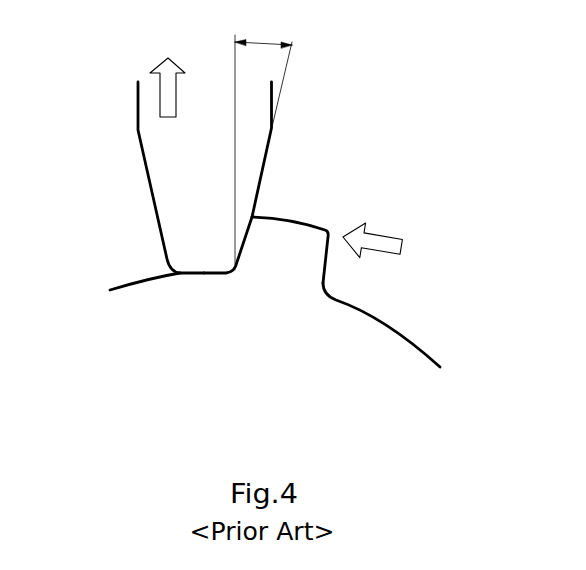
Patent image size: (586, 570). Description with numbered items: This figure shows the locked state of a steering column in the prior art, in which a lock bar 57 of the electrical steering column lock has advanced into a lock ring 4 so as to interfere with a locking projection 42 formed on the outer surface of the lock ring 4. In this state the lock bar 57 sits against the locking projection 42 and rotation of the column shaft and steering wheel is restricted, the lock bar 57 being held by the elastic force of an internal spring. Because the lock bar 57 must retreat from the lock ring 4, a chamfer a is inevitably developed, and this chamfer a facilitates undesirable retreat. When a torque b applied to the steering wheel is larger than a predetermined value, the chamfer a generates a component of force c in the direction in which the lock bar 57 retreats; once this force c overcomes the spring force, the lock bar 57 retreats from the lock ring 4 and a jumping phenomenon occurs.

The lock bar 57 is at (163, 173).
The locking projection 42 is at (296, 234).
The lock ring 4 is at (402, 350).
The chamfer a is at (263, 144).
The torque b is at (385, 241).
The component of force c is at (167, 100).